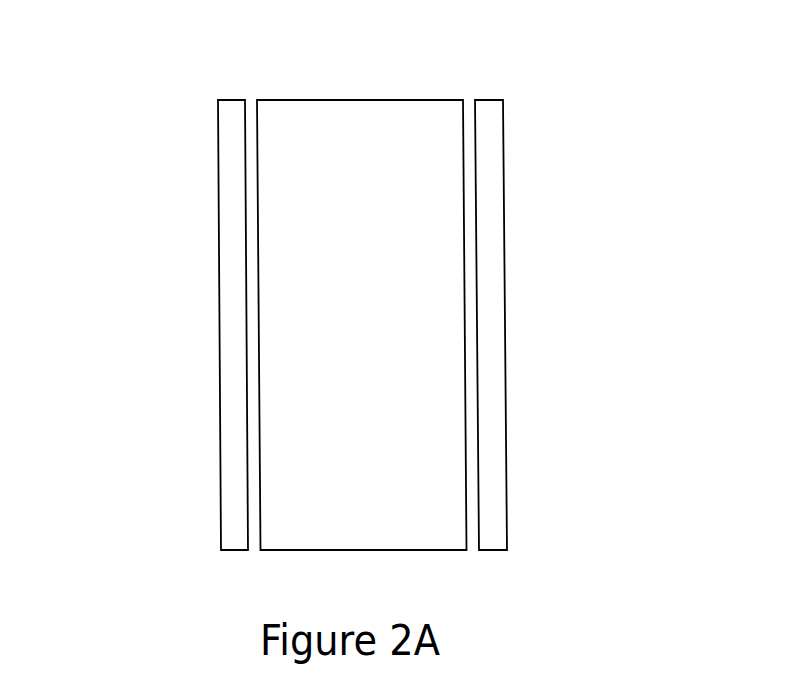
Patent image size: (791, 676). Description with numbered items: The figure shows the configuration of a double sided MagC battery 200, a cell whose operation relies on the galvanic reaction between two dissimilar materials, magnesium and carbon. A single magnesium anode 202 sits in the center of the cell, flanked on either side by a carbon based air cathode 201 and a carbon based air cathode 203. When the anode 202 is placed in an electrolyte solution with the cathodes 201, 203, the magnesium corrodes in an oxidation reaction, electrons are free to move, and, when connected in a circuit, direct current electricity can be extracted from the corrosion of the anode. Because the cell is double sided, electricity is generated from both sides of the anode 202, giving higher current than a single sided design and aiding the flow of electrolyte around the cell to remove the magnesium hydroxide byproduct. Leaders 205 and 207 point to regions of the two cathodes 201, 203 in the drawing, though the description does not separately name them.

The double sided MagC battery 200 is at (132, 248).
The carbon based air cathode 201 is at (218, 100).
The magnesium anode 202 is at (403, 210).
The carbon based air cathode 203 is at (482, 100).
The first electrode surface 205 is at (255, 478).
The second electrode surface 207 is at (473, 487).